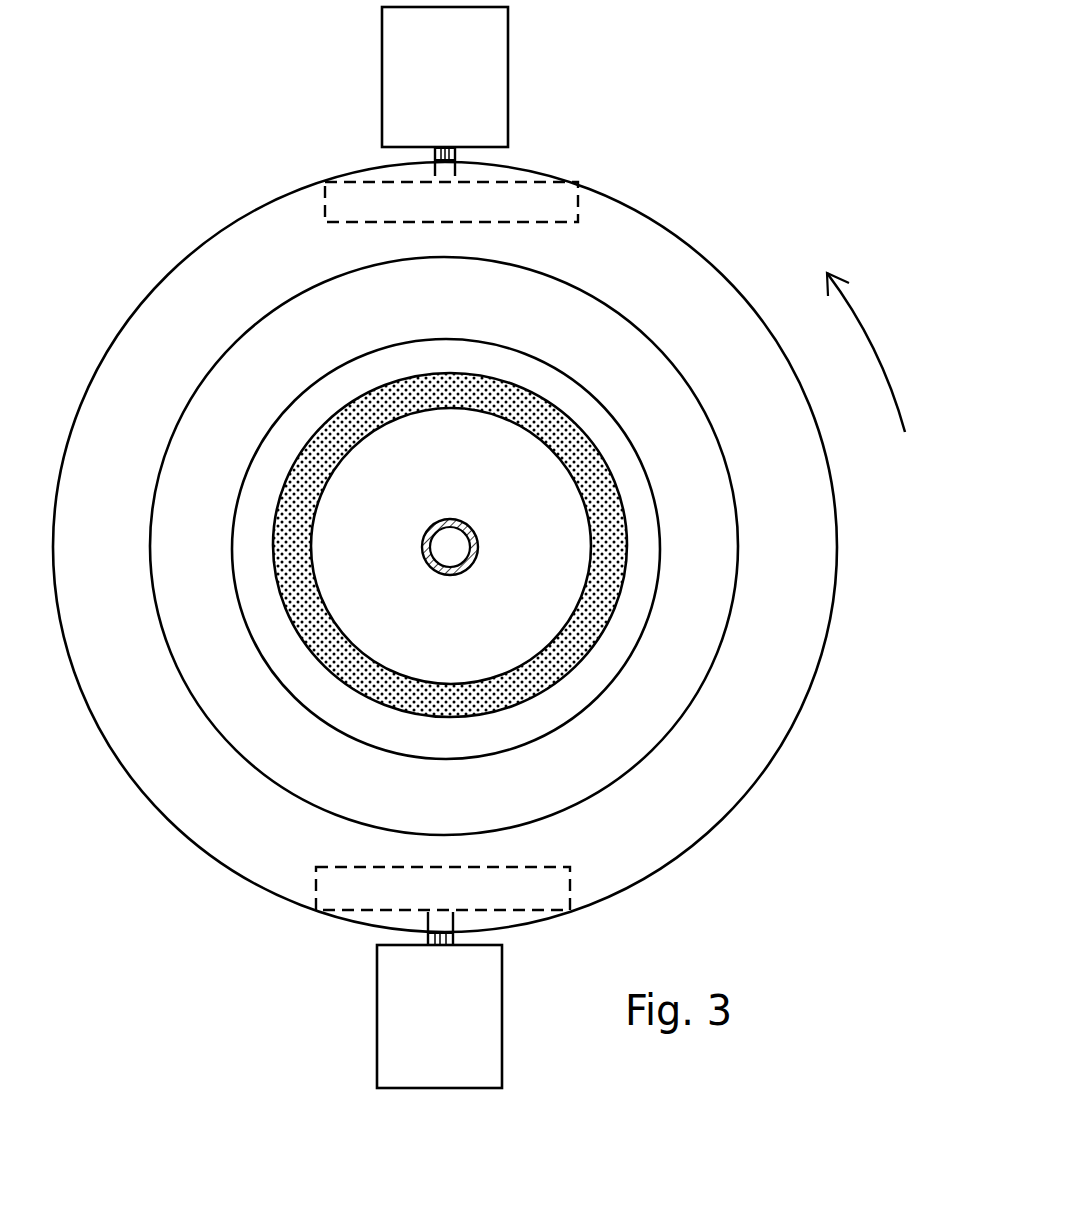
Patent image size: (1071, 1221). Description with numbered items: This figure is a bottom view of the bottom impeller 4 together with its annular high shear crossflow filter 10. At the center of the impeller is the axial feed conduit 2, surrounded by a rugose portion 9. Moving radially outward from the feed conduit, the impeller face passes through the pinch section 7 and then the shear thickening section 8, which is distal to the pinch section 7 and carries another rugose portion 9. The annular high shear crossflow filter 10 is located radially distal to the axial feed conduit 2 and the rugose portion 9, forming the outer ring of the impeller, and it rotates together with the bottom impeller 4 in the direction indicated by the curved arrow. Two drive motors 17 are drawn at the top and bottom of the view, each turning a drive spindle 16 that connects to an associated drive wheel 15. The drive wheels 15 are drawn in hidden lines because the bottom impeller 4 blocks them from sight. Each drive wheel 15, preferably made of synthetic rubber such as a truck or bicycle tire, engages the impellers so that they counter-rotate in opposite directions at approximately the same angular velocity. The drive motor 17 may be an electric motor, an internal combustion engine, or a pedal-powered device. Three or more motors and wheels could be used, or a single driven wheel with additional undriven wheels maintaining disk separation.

The axial feed conduit 2 is at (450, 547).
The bottom impeller 4 is at (657, 195).
The pinch section 7 is at (600, 696).
The shear thickening section 8 is at (709, 554).
The rugose portion 9 is at (715, 591).
The annular high shear crossflow filter 10 is at (528, 435).
The drive wheel 15 is at (368, 195).
The drive spindle 16 is at (457, 153).
The drive motor 17 is at (442, 547).